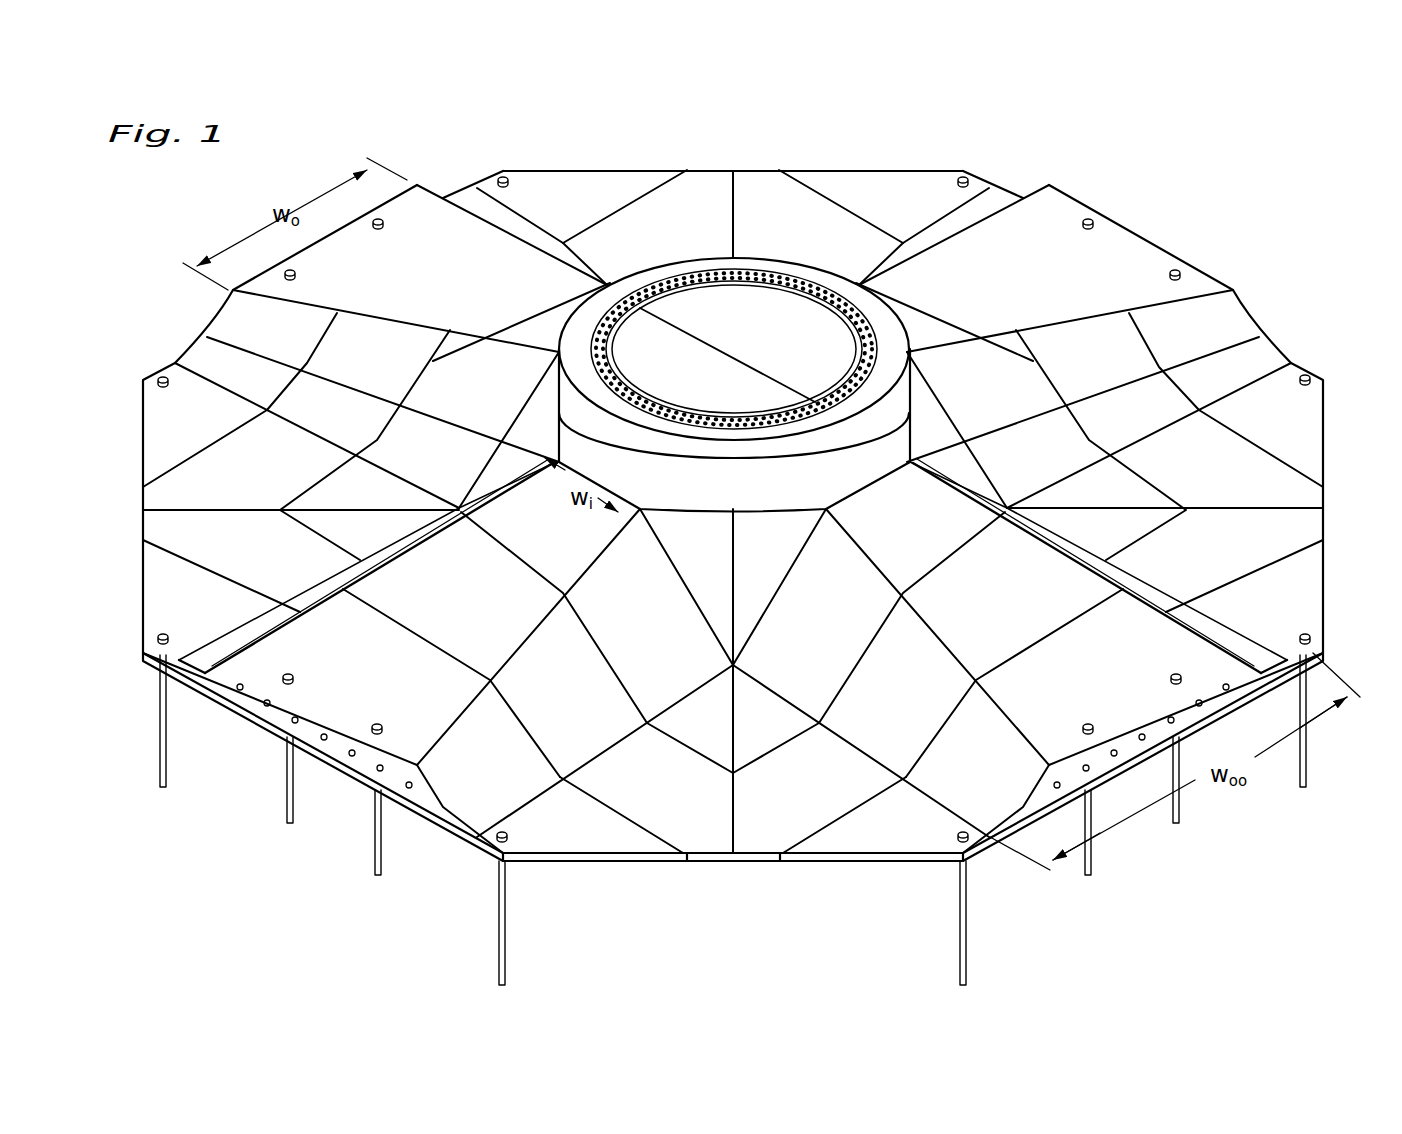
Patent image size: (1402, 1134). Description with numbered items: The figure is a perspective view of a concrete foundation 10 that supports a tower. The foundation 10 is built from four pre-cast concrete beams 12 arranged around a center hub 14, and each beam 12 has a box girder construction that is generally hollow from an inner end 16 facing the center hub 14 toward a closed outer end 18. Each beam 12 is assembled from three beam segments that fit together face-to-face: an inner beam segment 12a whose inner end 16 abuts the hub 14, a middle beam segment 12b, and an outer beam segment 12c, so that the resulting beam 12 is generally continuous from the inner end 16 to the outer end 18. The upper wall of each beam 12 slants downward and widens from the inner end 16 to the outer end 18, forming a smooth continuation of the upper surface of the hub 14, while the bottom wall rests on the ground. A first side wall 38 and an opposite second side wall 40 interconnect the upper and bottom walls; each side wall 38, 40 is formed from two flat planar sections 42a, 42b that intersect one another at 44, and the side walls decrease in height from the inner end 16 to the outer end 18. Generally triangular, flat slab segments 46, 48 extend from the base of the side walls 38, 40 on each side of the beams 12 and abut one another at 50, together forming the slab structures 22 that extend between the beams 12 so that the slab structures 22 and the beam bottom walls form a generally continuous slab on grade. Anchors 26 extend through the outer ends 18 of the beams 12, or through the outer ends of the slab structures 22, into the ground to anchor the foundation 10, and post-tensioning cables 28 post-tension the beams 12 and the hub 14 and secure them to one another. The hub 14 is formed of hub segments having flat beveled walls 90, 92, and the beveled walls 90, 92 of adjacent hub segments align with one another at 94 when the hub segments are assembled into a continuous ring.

The concrete foundation 10 is at (950, 130).
The pre-cast concrete beam 12 is at (398, 217).
The inner beam segment 12a is at (945, 538).
The middle beam segment 12b is at (1028, 608).
The outer beam segment 12c is at (1122, 668).
The center hub 14 is at (757, 592).
The inner end 16 is at (561, 320).
The outer end 18 is at (1163, 244).
The slab structure 22 is at (700, 182).
The anchor 26 is at (1092, 220).
The post-tensioning cable 28 is at (324, 742).
The first side wall 38 is at (913, 747).
The second side wall 40 is at (553, 743).
The intersection of side wall sections 44 is at (230, 330).
The side wall section 42a is at (280, 338).
The side wall section 42b is at (268, 381).
The slab segment 46 is at (800, 190).
The slab segment 48 is at (635, 190).
The abutment of slab segments 50 is at (757, 185).
The beveled wall 90 is at (778, 553).
The beveled wall 92 is at (714, 553).
The alignment of beveled walls 94 is at (733, 605).